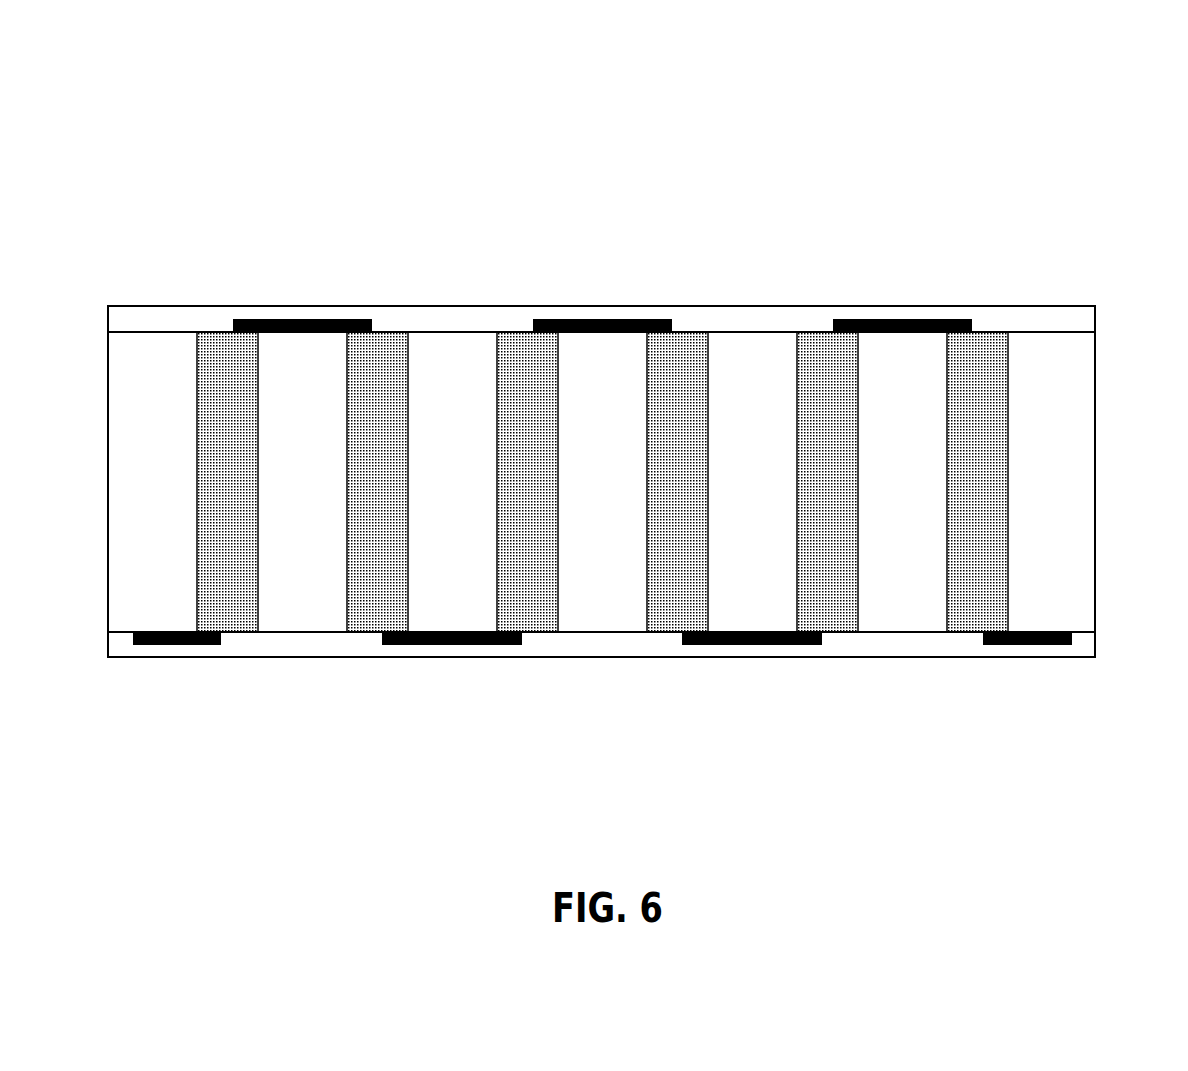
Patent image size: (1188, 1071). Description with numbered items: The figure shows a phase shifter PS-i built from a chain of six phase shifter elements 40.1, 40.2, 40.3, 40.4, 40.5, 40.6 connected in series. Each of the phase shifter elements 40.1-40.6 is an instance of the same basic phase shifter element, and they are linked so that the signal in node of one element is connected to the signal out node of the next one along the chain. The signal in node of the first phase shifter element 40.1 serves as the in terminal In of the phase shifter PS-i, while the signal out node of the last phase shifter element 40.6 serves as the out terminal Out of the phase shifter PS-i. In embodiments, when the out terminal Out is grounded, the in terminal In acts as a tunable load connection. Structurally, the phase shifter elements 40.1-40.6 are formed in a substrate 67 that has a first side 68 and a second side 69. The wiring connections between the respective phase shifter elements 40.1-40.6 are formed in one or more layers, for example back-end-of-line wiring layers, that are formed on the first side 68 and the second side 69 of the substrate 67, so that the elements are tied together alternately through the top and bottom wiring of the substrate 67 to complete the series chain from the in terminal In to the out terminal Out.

The substrate 67 is at (108, 465).
The first side 68 is at (132, 331).
The second side 69 is at (297, 632).
The first phase shifter element 40.1 is at (227, 482).
The phase shifter element 40.2 is at (377, 482).
The phase shifter element 40.3 is at (527, 482).
The phase shifter element 40.4 is at (677, 482).
The phase shifter element 40.5 is at (827, 482).
The last phase shifter element 40.6 is at (977, 482).
The phase shifter PS-i is at (153, 120).
The in terminal In is at (133, 645).
The out terminal Out is at (1072, 645).